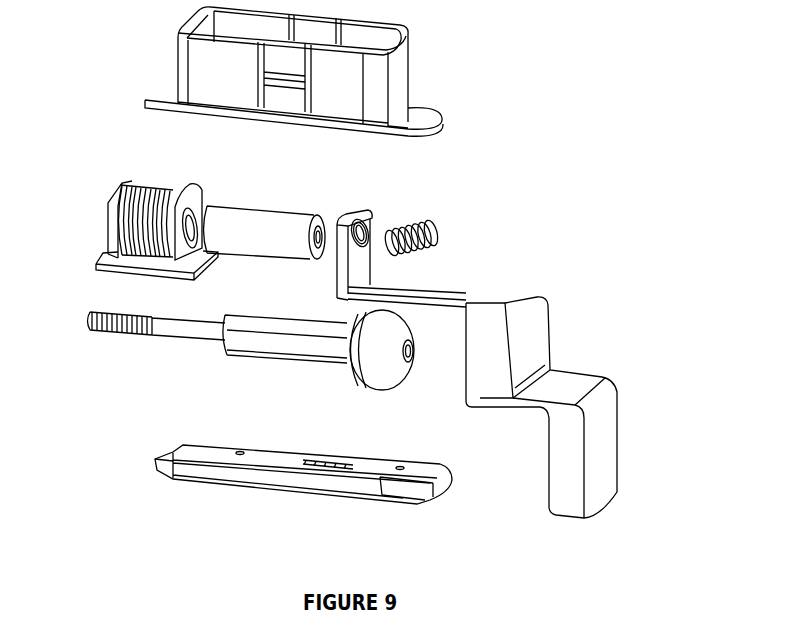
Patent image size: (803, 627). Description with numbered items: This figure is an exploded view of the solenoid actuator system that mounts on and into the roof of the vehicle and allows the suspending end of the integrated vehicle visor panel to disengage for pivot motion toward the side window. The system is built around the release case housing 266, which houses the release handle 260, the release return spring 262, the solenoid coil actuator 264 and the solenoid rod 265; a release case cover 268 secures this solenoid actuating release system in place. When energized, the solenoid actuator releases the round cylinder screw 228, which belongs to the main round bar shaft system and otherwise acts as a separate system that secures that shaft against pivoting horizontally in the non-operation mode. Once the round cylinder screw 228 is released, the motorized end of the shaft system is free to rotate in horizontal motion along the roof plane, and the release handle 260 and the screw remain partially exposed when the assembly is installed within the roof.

The round cylinder screw 228 is at (266, 344).
The release handle 260 is at (528, 331).
The release return spring 262 is at (438, 236).
The solenoid coil actuator 264 is at (156, 184).
The solenoid rod 265 is at (228, 228).
The release case housing 266 is at (397, 57).
The release case cover 268 is at (287, 488).